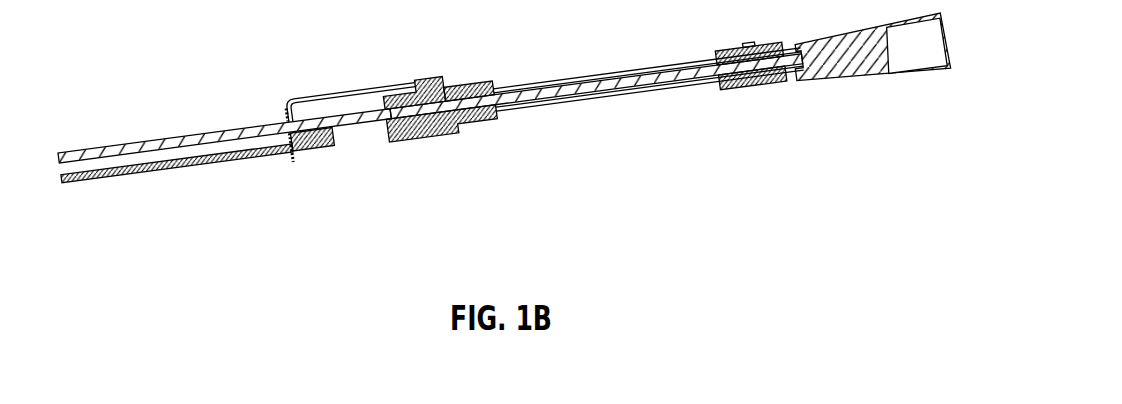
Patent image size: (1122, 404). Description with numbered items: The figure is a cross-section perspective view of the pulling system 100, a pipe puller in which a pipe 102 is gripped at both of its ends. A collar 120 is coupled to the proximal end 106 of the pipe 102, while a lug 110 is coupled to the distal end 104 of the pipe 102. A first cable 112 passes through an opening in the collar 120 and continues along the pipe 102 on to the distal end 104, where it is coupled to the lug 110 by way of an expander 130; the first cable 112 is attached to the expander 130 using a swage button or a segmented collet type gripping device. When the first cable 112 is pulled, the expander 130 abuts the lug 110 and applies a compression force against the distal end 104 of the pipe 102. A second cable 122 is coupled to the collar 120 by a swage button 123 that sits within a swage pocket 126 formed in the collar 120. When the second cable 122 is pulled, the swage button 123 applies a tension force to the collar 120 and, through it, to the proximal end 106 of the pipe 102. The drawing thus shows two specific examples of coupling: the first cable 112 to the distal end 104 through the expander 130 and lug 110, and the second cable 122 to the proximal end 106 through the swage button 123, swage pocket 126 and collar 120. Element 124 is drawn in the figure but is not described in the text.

The pulling system 100 is at (658, 179).
The pipe 102 is at (613, 70).
The distal end 104 is at (663, 93).
The proximal end 106 is at (507, 113).
The lug 110 is at (763, 84).
The first cable 112 is at (146, 141).
The collar 120 is at (448, 137).
The second cable 122 is at (163, 167).
The swage button 123 is at (333, 147).
The seal 124 is at (466, 88).
The swage pocket 126 is at (290, 163).
The expander 130 is at (863, 72).